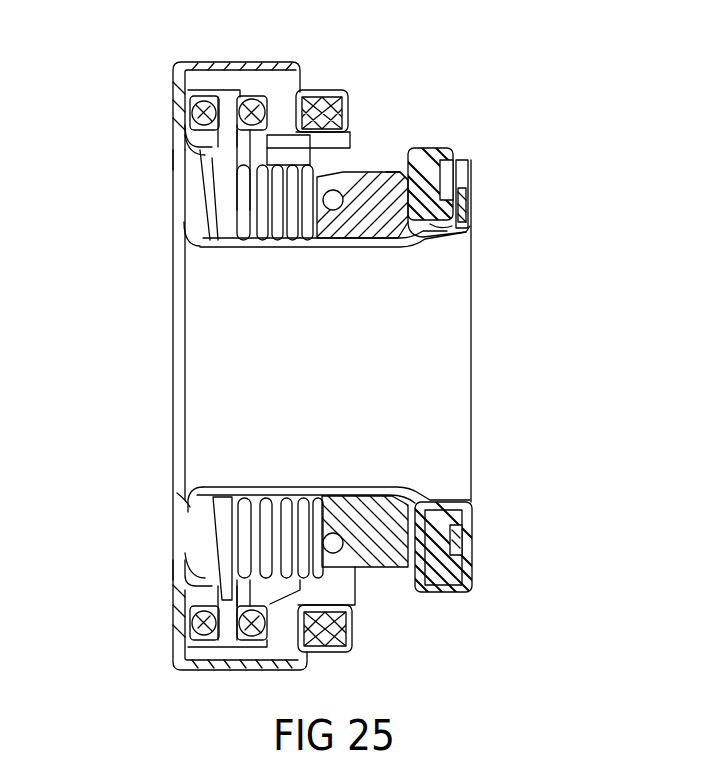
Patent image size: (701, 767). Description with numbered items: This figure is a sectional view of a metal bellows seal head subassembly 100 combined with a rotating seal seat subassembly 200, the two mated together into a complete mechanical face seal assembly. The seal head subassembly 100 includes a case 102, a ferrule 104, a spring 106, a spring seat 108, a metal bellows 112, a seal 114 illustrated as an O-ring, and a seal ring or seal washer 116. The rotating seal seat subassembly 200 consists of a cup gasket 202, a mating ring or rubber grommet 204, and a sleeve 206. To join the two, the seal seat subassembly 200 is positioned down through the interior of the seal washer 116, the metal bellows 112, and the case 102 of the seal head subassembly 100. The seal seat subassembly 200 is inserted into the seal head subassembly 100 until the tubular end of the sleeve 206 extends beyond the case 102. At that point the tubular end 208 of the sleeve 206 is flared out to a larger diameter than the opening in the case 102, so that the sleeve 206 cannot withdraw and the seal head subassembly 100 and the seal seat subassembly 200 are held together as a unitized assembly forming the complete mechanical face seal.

The metal bellows seal head subassembly 100 is at (172, 548).
The case 102 is at (166, 130).
The ferrule 104 is at (210, 82).
The spring 106 is at (262, 82).
The spring seat 108 is at (320, 82).
The metal bellows 112 is at (236, 252).
The seal 114 is at (338, 218).
The seal ring 116 is at (388, 165).
The seal seat subassembly 200 is at (497, 530).
The cup gasket 202 is at (482, 203).
The mating ring 204 is at (438, 134).
The sleeve 206 is at (448, 254).
The tubular end 208 is at (187, 513).